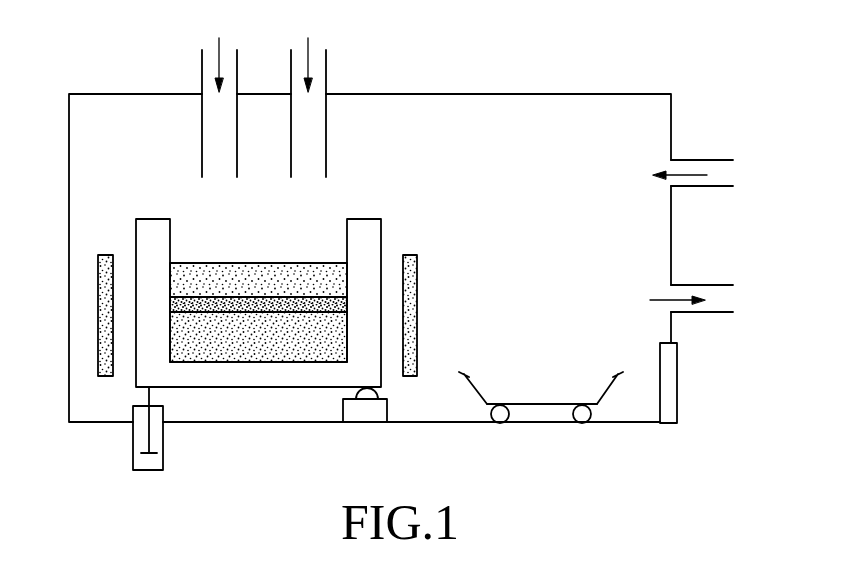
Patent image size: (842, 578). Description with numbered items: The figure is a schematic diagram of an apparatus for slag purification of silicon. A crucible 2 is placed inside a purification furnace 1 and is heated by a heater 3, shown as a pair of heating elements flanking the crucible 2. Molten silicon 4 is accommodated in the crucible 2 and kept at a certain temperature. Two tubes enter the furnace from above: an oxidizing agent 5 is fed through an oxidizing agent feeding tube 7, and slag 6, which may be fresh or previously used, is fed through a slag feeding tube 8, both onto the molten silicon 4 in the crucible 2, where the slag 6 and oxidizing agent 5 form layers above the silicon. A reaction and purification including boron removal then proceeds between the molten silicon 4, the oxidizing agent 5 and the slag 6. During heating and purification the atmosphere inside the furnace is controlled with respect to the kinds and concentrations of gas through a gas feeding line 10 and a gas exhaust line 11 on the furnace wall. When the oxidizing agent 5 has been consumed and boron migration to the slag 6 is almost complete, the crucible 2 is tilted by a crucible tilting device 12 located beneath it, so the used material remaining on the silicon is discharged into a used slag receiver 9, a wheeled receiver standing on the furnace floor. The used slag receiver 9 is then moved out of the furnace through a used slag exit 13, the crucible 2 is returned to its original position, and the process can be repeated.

The purification furnace 1 is at (511, 94).
The crucible 2 is at (148, 228).
The heater 3 is at (98, 316).
The molten silicon 4 is at (290, 352).
The oxidizing agent 5 is at (222, 299).
The slag 6 is at (330, 275).
The oxidizing agent feeding tube 7 is at (202, 80).
The slag feeding tube 8 is at (326, 118).
The used slag receiver 9 is at (466, 376).
The gas feeding line 10 is at (692, 160).
The gas exhaust line 11 is at (680, 286).
The crucible tilting device 12 is at (133, 447).
The used slag exit 13 is at (678, 380).